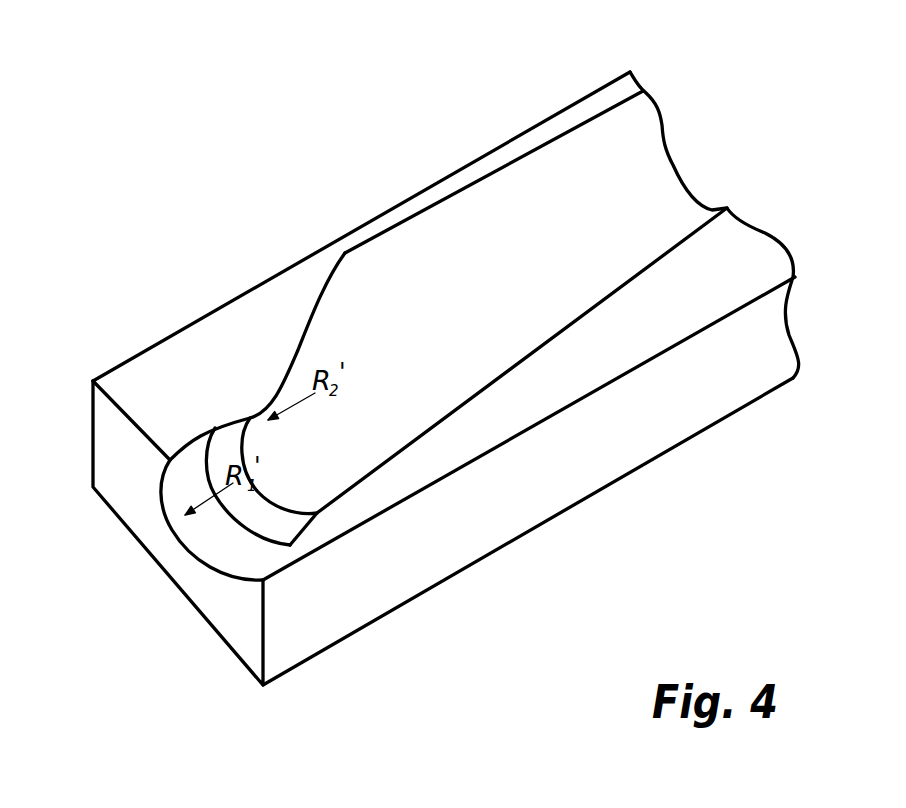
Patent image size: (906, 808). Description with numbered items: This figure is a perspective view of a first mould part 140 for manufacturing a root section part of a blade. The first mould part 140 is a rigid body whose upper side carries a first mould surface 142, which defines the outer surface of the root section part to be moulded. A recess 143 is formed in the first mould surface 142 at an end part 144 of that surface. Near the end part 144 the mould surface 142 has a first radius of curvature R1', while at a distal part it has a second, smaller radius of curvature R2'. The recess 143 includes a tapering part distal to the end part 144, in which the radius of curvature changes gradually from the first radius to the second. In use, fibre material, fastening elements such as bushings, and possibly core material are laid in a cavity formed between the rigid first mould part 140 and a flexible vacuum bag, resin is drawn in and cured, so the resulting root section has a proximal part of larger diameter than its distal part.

The first mould part 140 is at (622, 467).
The first mould surface 142 is at (463, 263).
The recess 143 is at (227, 560).
The end part 144 is at (175, 522).